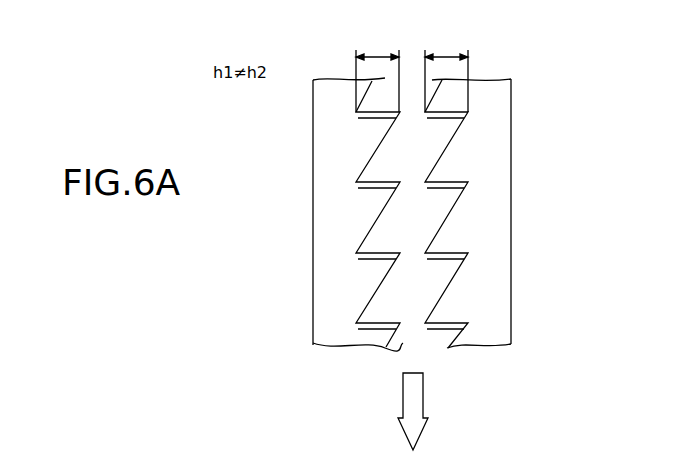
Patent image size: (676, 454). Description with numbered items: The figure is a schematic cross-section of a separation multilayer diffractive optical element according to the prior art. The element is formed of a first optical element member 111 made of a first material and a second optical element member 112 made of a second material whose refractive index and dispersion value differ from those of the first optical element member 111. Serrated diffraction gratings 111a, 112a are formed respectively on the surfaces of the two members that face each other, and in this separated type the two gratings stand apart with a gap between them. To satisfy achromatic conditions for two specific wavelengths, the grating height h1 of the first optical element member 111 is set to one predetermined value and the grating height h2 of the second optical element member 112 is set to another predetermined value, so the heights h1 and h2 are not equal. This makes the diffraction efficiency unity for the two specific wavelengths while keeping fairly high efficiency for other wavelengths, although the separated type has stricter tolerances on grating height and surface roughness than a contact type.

The first optical element member 111 is at (441, 214).
The second optical element member 112 is at (379, 213).
The serrated diffraction grating 111a is at (382, 143).
The serrated diffraction grating 112a is at (488, 233).
The grating height of the first optical element member h1 is at (377, 75).
The grating height of the second optical element member h2 is at (446, 75).